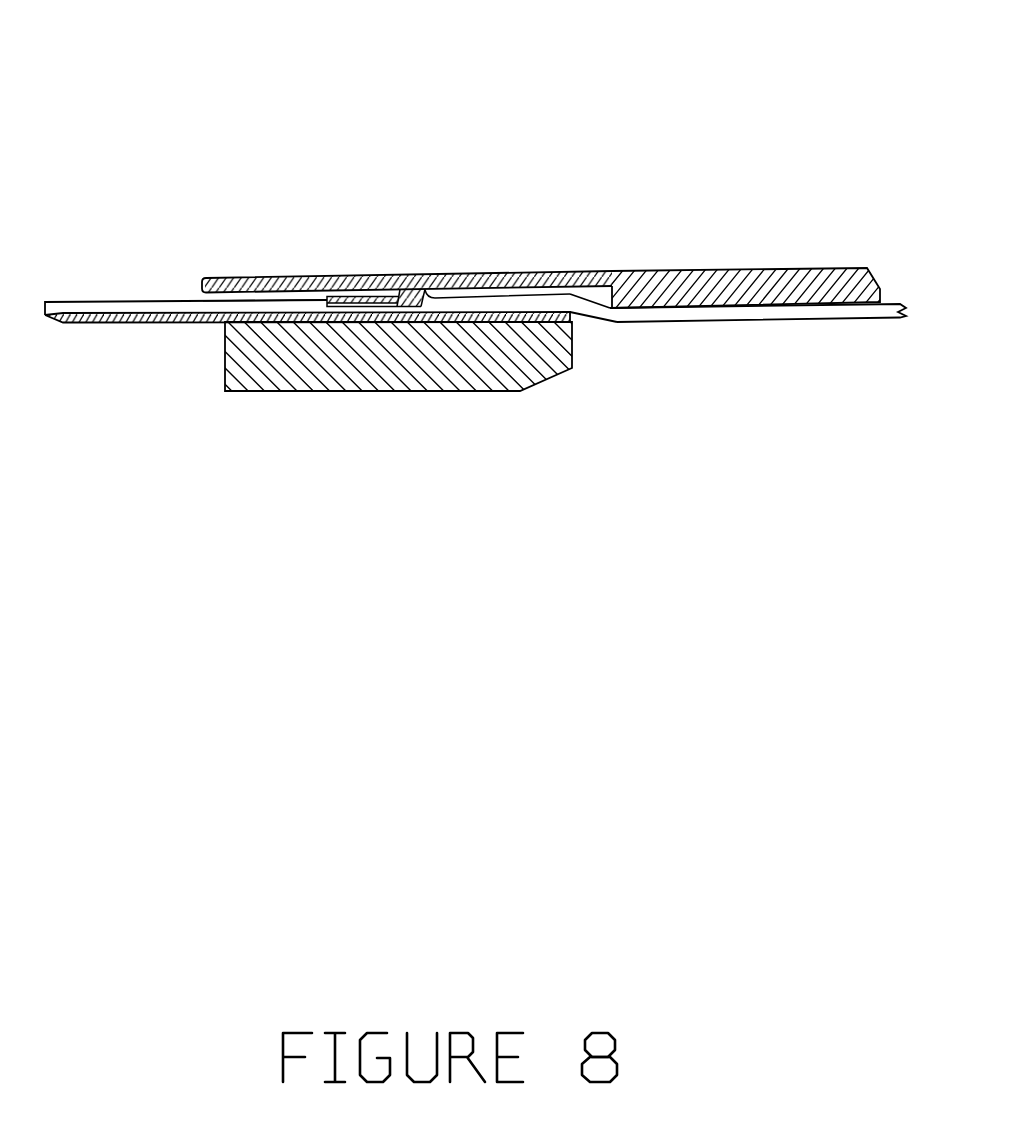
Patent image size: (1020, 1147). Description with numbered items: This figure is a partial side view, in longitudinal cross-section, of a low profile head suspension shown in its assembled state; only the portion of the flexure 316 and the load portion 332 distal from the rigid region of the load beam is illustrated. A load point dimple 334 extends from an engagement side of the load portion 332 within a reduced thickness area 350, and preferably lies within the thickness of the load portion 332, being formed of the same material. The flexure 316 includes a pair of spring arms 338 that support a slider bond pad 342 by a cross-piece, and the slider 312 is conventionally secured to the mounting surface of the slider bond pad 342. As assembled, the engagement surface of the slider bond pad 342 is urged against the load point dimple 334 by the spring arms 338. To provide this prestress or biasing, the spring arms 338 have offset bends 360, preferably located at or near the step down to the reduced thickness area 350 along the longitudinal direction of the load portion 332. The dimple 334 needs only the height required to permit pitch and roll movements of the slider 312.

The slider 312 is at (502, 380).
The flexure 316 is at (703, 322).
The load portion 332 is at (707, 279).
The load point dimple 334 is at (415, 290).
The spring arms 338 is at (190, 306).
The slider bond pad 342 is at (327, 300).
The reduced thickness area 350 is at (262, 293).
The offset bends 360 is at (579, 306).